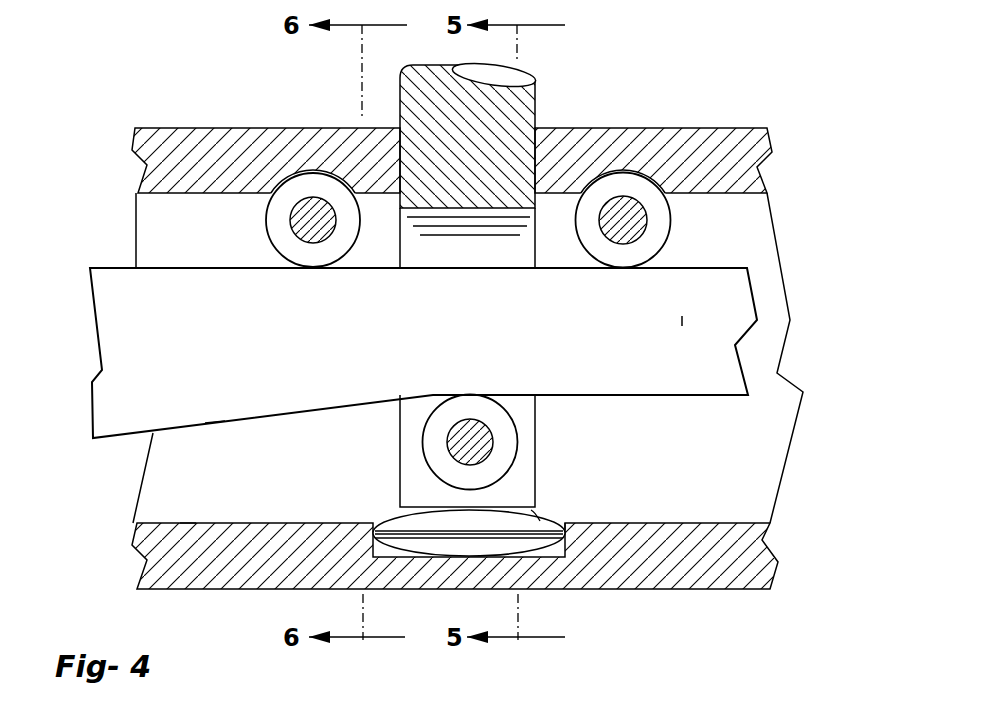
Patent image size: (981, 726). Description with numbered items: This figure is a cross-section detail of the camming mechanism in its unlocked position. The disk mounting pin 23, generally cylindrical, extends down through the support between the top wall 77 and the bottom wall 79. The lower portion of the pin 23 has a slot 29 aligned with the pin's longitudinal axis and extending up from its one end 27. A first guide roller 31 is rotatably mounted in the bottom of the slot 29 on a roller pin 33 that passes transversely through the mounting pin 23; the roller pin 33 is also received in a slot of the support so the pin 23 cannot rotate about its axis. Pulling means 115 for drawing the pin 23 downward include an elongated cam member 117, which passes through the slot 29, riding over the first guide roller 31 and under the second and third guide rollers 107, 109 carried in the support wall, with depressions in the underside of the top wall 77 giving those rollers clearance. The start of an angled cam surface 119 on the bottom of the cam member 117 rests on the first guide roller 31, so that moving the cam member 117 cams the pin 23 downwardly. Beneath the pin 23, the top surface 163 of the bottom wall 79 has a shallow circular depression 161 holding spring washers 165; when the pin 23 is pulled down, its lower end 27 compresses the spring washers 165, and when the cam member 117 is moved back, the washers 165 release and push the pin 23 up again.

The disk mounting pin 23 is at (537, 93).
The slot 29 is at (521, 259).
The top wall 77 is at (747, 150).
The second guide roller 107 is at (670, 218).
The third guide roller 109 is at (267, 230).
The pulling means 115 is at (752, 279).
The cam member 117 is at (682, 321).
The roller pin 33 is at (470, 442).
The first guide roller 31 is at (503, 462).
The spring washers 165 is at (540, 521).
The circular depression 161 is at (565, 523).
The bottom wall 79 is at (752, 562).
The one end of the pin 27 is at (531, 512).
The angled cam surface 119 is at (213, 430).
The top surface 163 is at (187, 521).